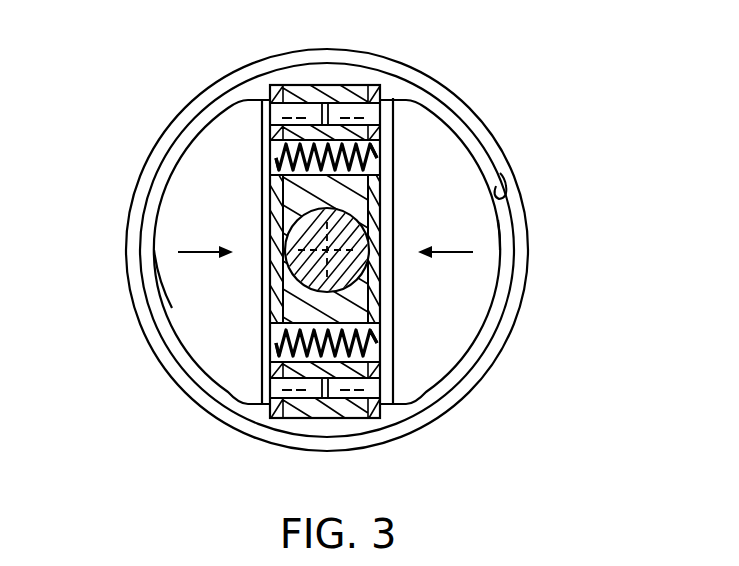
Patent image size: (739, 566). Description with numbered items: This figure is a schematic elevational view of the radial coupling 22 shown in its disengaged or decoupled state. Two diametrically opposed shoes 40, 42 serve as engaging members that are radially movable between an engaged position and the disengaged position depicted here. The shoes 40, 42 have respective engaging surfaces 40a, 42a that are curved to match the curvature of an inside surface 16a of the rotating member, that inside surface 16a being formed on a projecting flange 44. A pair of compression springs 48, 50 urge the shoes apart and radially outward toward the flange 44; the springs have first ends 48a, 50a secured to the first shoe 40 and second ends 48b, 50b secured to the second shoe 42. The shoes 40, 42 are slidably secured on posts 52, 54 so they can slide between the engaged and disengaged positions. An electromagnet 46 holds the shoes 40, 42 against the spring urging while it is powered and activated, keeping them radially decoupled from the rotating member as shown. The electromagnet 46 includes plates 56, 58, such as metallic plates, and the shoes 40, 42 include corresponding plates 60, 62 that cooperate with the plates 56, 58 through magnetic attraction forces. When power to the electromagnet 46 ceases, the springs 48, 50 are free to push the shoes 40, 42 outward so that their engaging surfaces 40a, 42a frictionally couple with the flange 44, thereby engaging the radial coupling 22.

The inside surface 16a is at (496, 186).
The radial coupling 22 is at (552, 164).
The shoe 40 is at (197, 333).
The engaging surface 40a is at (160, 292).
The shoe 42 is at (457, 340).
The engaging surface 42a is at (500, 232).
The flange 44 is at (523, 285).
The electromagnet 46 is at (355, 412).
The spring 48 is at (372, 148).
The first end 48a is at (275, 165).
The second end 48b is at (384, 167).
The spring 50 is at (343, 320).
The first end 50a is at (275, 350).
The second end 50b is at (380, 350).
The post 52 is at (340, 110).
The post 54 is at (343, 387).
The plate 56 is at (270, 256).
The plate 58 is at (377, 219).
The plate 60 is at (260, 125).
The plate 62 is at (387, 118).